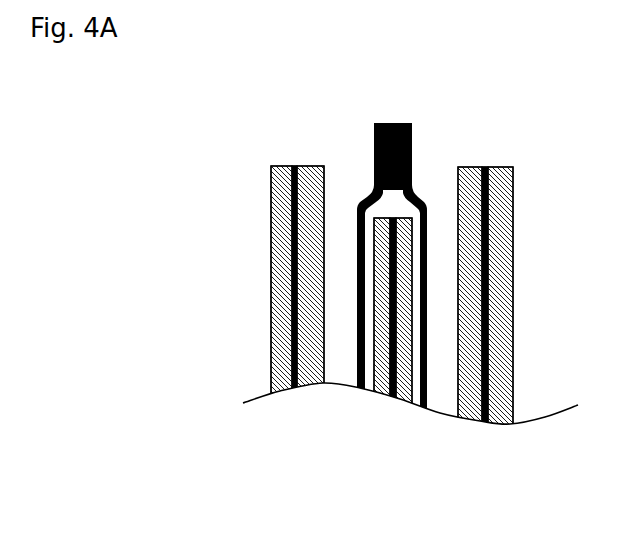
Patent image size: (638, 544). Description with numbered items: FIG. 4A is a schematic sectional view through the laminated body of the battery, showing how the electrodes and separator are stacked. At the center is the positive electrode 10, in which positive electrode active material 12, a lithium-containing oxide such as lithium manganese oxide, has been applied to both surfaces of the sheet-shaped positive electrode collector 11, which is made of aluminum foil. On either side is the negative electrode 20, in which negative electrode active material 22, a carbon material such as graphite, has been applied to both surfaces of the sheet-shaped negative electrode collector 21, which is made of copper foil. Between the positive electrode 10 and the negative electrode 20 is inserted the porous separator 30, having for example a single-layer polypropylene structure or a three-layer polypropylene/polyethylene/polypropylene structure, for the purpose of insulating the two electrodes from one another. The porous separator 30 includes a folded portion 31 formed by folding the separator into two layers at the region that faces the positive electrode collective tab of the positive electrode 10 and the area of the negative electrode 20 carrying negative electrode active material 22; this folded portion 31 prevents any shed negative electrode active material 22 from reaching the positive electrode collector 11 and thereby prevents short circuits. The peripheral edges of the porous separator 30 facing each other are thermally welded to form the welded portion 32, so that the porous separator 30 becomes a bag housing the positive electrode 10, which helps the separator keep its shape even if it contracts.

The positive electrode 10 is at (386, 362).
The positive electrode collector 11 is at (392, 400).
The positive electrode active material 12 is at (377, 390).
The negative electrode 20 is at (536, 302).
The negative electrode collector 21 is at (487, 297).
The negative electrode active material 22 is at (510, 250).
The porous separator 30 is at (352, 236).
The folded portion 31 is at (345, 147).
The welded portion 32 is at (345, 154).